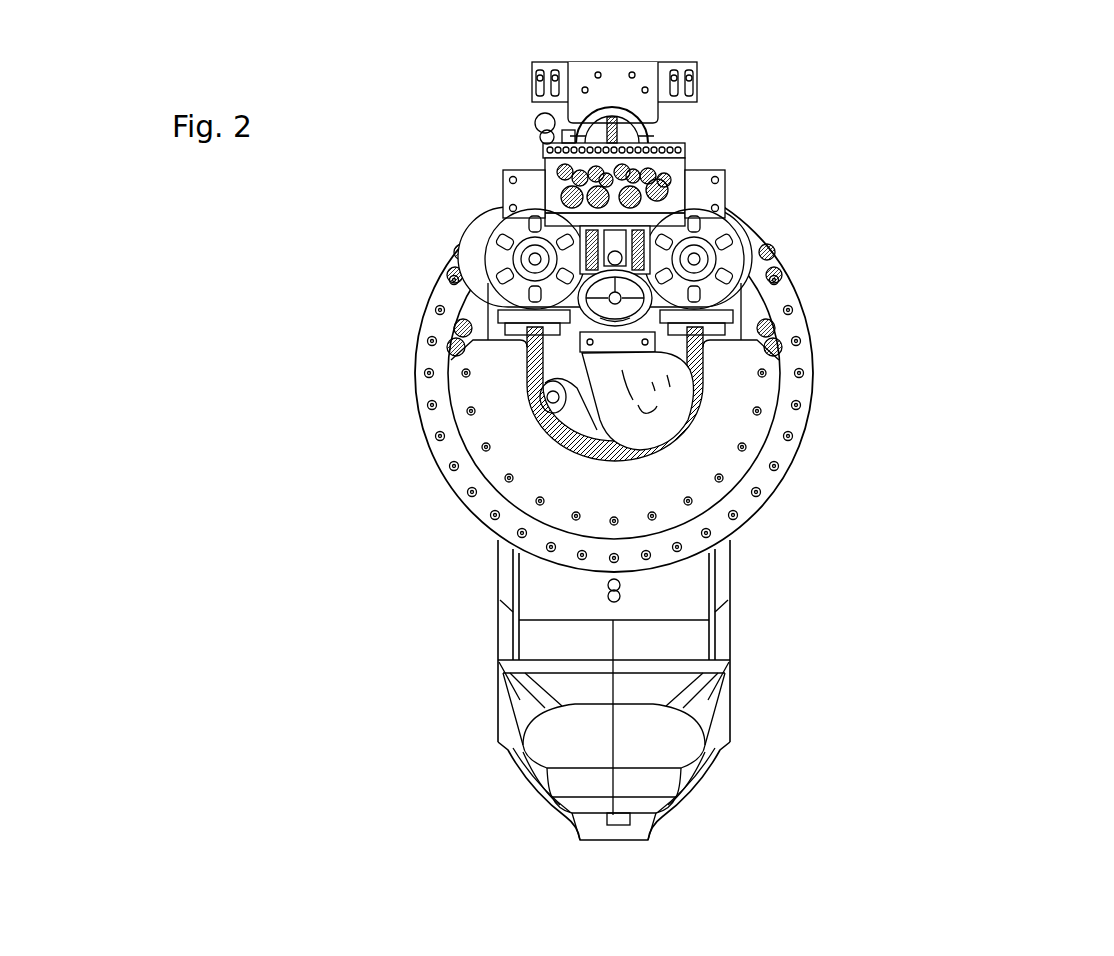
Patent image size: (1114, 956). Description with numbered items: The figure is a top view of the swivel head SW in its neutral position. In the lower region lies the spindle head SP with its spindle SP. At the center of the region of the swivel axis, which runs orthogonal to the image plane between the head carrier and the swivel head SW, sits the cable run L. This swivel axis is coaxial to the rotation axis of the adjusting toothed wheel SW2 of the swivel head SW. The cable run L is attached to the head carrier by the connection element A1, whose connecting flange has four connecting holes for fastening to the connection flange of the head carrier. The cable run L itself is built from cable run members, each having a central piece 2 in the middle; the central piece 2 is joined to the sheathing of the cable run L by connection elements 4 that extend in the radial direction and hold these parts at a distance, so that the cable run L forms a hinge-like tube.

The central piece 2 is at (560, 298).
The connection elements 4 is at (765, 267).
The connection element A1 is at (575, 350).
The cable run L is at (667, 417).
The swivel head SW is at (288, 527).
The adjusting toothed wheel SW2 is at (713, 337).
The spindle head SP is at (427, 704).